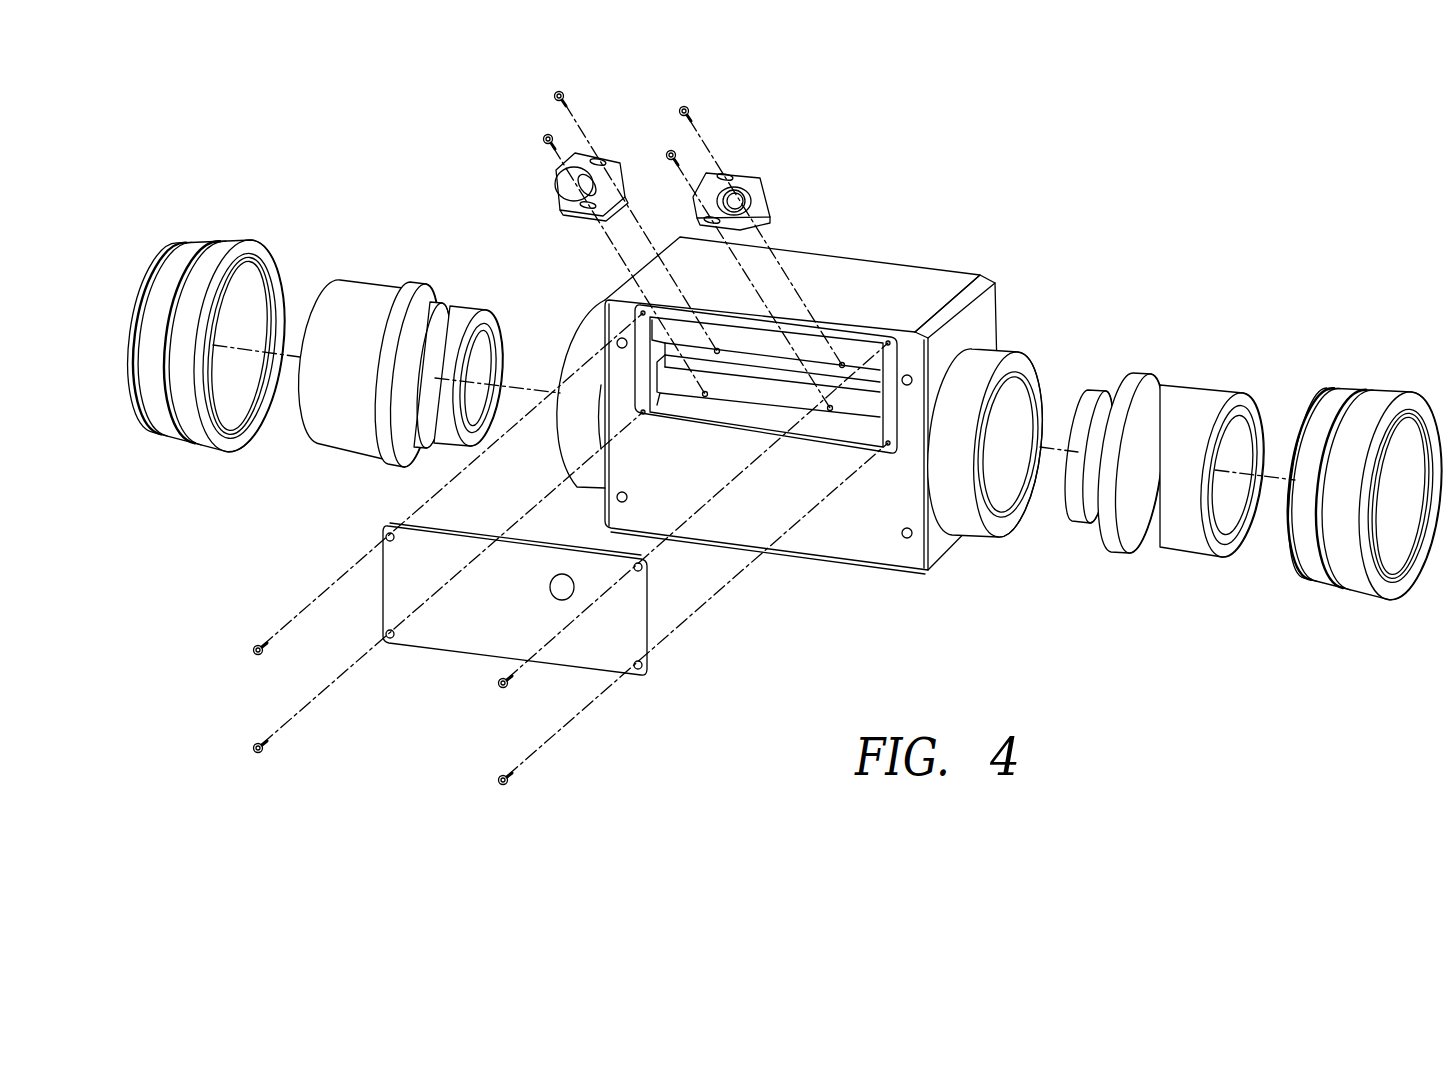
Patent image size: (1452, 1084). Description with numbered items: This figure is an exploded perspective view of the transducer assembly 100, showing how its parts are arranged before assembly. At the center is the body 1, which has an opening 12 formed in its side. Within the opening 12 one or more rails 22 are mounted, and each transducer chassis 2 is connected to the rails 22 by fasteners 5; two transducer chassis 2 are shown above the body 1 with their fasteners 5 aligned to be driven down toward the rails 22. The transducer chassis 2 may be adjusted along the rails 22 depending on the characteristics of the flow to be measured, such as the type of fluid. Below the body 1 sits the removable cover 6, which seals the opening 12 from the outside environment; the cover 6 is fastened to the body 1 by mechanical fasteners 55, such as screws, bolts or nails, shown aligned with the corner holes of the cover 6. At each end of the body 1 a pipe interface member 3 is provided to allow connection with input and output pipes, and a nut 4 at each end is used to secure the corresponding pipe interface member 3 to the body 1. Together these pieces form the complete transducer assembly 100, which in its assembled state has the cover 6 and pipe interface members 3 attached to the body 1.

The transducer assembly 100 is at (790, 434).
The body 1 is at (823, 268).
The transducer chassis 2 is at (565, 188).
The pipe interface member 3 is at (383, 297).
The nut 4 is at (191, 243).
The fastener 5 is at (546, 135).
The removable cover 6 is at (474, 639).
The opening 12 is at (857, 350).
The rail 22 is at (870, 373).
The mechanical fastener 55 is at (256, 655).